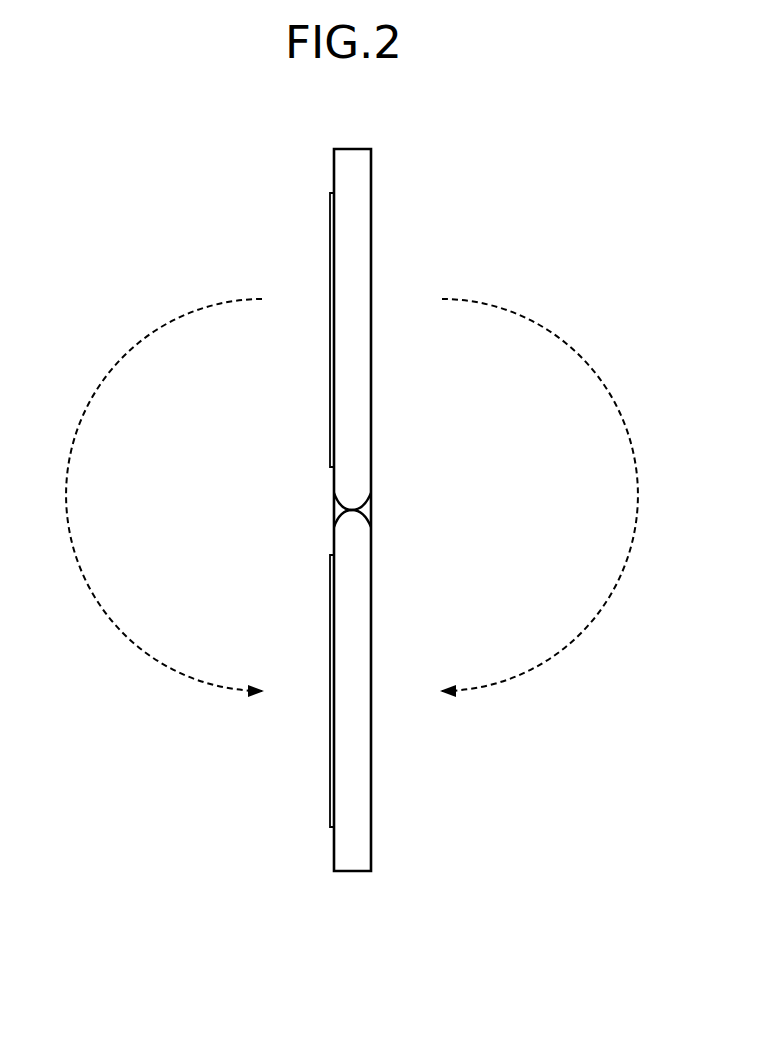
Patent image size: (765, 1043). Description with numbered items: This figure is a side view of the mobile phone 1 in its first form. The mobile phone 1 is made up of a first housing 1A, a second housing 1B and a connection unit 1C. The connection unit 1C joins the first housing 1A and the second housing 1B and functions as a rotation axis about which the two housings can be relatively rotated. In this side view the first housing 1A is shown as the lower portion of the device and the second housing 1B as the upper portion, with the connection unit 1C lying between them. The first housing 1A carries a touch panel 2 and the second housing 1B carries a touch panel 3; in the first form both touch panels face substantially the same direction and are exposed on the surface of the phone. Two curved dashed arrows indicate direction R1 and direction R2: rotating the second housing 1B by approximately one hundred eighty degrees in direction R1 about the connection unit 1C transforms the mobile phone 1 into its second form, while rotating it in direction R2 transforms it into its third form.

The mobile phone 1 is at (576, 132).
The first housing 1A is at (371, 810).
The second housing 1B is at (371, 205).
The connection unit 1C is at (371, 508).
The touch panel 2 is at (330, 778).
The touch panel 3 is at (330, 236).
The direction R1 is at (587, 358).
The direction R2 is at (116, 358).